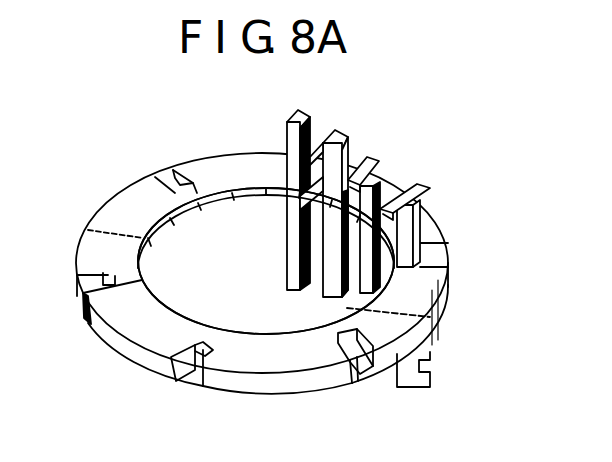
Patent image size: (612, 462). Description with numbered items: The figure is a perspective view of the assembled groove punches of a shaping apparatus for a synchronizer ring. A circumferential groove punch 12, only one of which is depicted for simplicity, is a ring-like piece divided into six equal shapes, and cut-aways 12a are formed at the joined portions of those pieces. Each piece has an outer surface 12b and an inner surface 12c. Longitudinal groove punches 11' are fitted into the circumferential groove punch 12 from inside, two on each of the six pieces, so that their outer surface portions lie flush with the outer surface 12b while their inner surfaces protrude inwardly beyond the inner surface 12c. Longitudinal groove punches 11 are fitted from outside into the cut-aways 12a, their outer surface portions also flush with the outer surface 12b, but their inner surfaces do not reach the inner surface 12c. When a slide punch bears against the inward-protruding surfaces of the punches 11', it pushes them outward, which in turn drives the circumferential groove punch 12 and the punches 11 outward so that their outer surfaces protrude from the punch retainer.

The longitudinal groove punch 11 is at (396, 185).
The longitudinal groove punch 11' is at (417, 208).
The circumferential groove punch 12 is at (140, 337).
The cut-away 12a is at (190, 380).
The outer surface 12b is at (323, 377).
The inner surface 12c is at (190, 217).